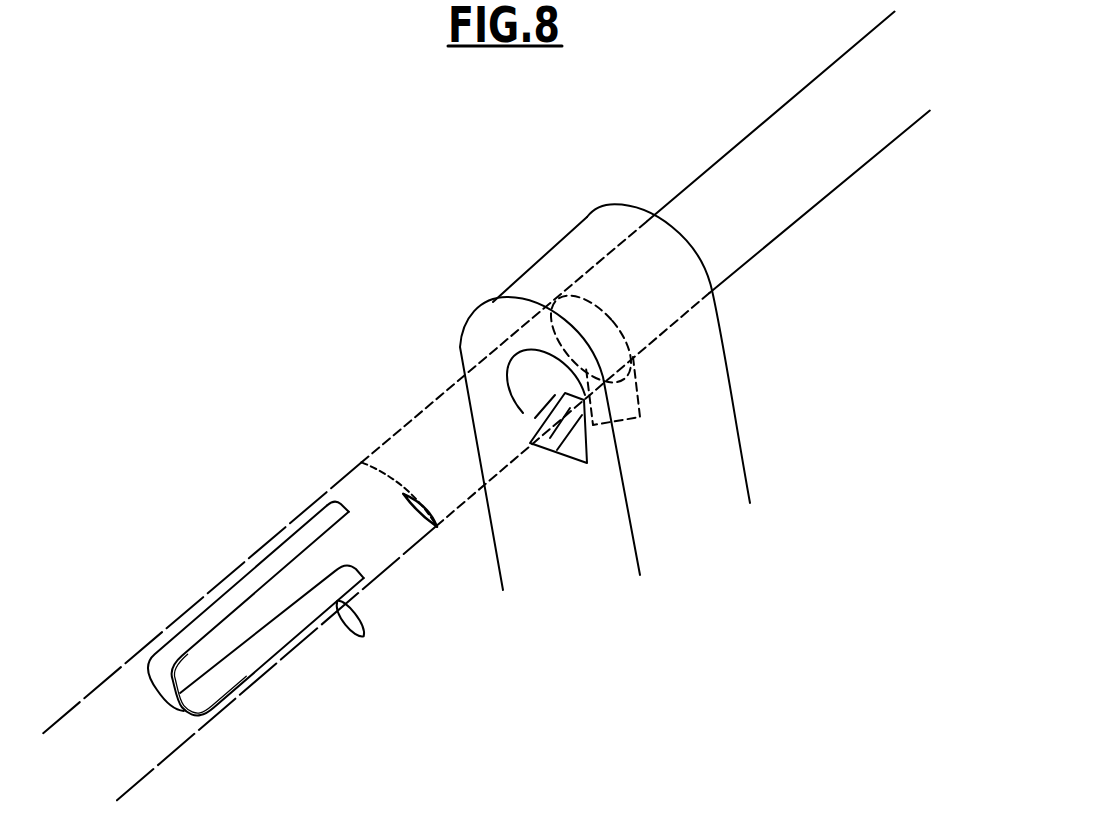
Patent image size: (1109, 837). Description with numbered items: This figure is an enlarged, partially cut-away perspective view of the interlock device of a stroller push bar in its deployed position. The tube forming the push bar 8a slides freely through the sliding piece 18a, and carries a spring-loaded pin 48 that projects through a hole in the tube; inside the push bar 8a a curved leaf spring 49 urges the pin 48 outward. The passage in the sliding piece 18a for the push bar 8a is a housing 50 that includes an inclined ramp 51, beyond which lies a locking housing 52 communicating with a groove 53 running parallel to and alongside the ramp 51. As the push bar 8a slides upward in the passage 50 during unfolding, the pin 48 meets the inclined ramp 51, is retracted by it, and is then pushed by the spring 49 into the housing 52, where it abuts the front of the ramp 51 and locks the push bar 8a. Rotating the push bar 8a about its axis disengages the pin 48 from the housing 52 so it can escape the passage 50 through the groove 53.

The push bar 8a is at (792, 137).
The sliding piece 18a is at (690, 387).
The spring-loaded pin 48 is at (347, 613).
The curved leaf spring 49 is at (223, 607).
The housing 50 is at (530, 408).
The inclined ramp 51 is at (552, 445).
The locking housing 52 is at (640, 432).
The groove 53 is at (571, 450).